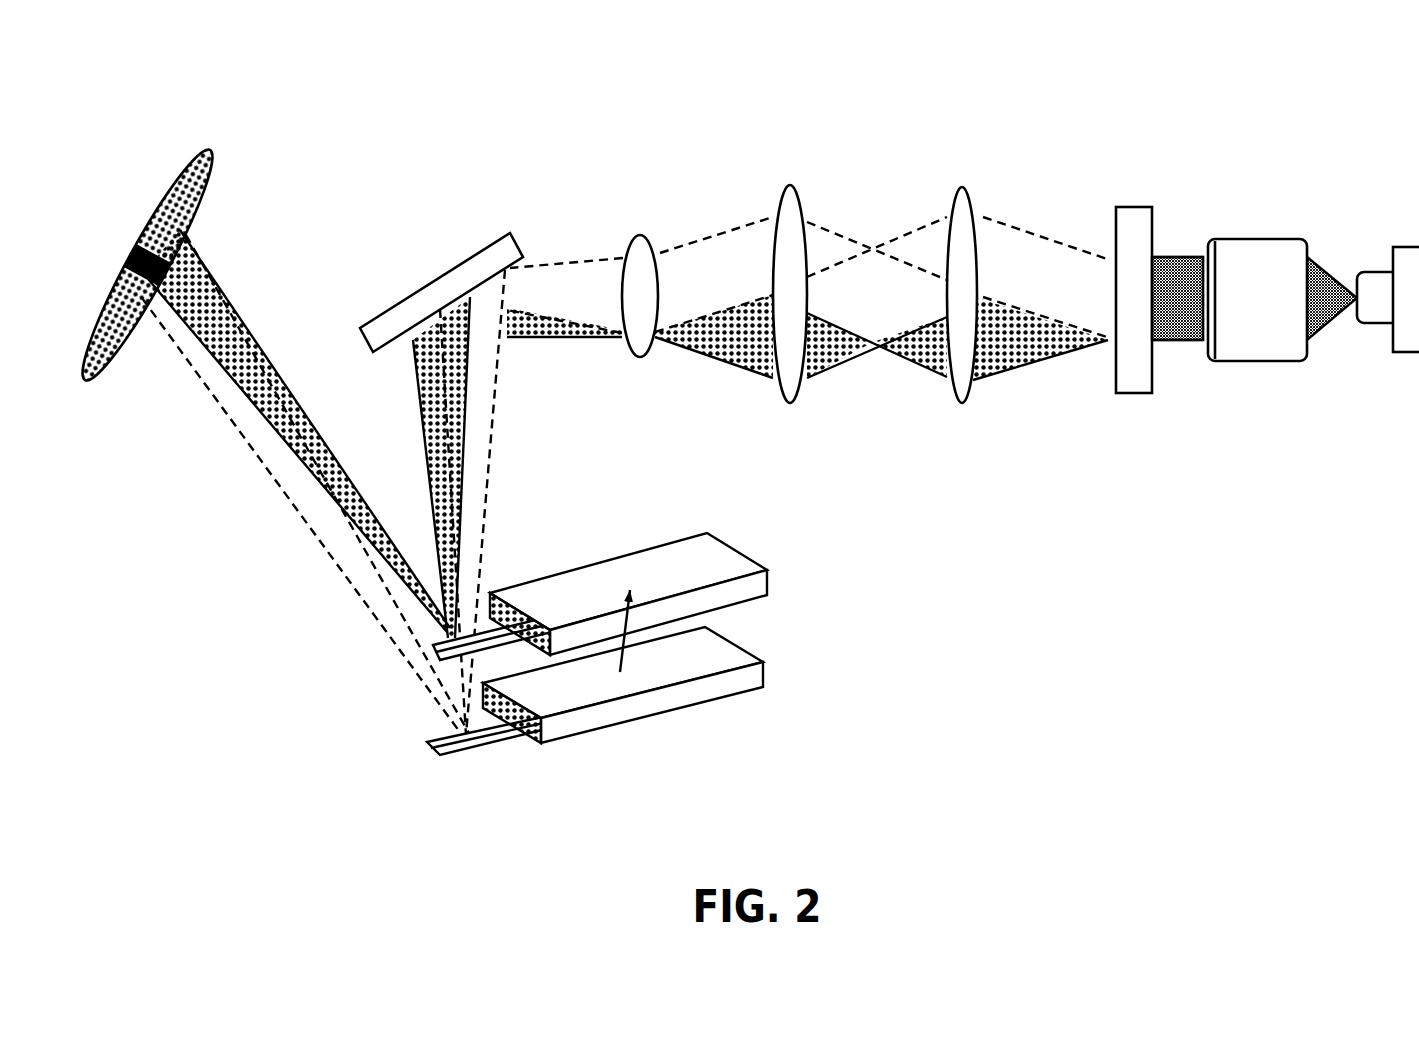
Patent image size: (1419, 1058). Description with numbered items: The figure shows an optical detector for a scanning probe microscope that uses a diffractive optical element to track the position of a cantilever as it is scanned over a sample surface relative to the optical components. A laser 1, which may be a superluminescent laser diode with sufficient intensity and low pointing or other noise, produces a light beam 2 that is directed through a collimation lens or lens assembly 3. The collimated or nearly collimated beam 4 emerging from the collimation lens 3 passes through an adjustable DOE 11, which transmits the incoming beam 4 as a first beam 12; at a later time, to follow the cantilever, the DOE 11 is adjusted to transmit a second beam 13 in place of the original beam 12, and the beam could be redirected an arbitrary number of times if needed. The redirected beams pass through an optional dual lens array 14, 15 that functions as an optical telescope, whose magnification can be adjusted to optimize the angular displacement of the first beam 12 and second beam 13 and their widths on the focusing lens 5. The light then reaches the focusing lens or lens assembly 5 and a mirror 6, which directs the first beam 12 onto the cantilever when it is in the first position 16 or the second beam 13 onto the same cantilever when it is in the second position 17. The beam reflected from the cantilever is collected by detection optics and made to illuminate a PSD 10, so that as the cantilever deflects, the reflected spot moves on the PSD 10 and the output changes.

The laser 1 is at (1408, 360).
The light beam 2 is at (1337, 334).
The collimation lens or lens assembly 3 is at (1268, 237).
The collimated beam 4 is at (1181, 253).
The focusing lens or lens assembly 5 is at (639, 232).
The mirror 6 is at (449, 268).
The PSD 10 is at (213, 145).
The adjustable DOE 11 is at (1133, 203).
The first beam 12 is at (1048, 230).
The second beam 13 is at (1002, 382).
The dual lens array lens 14 is at (962, 184).
The dual lens array lens 15 is at (789, 184).
The first position 16 is at (742, 642).
The second position 17 is at (732, 540).